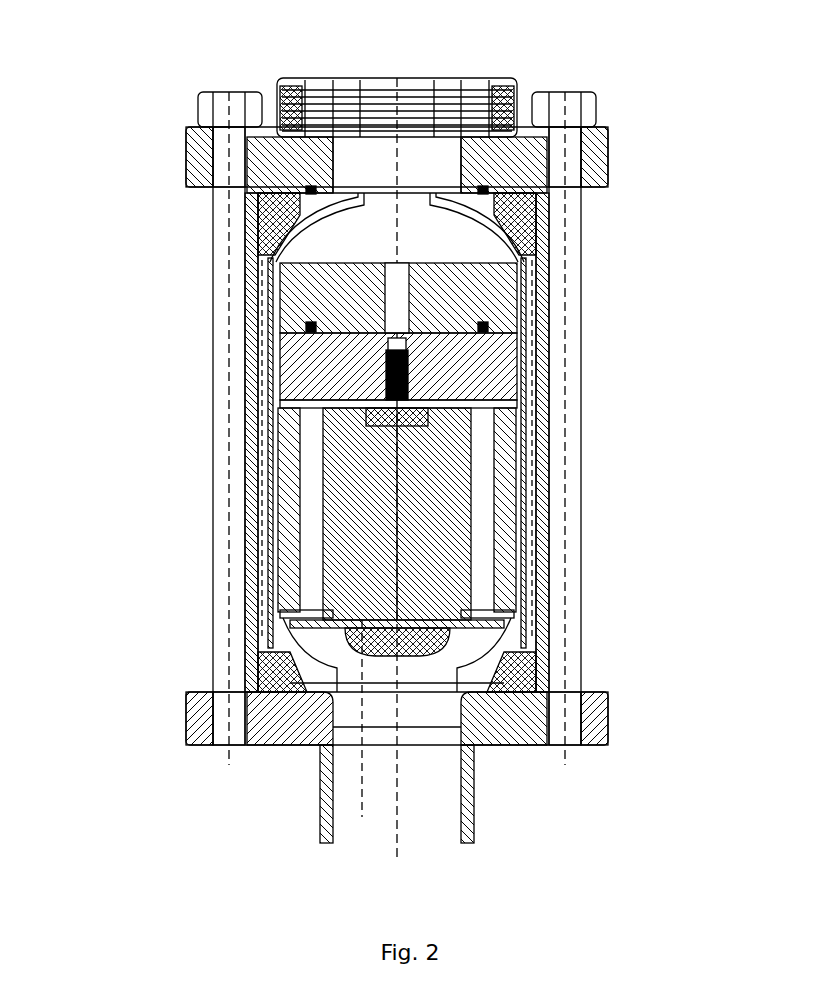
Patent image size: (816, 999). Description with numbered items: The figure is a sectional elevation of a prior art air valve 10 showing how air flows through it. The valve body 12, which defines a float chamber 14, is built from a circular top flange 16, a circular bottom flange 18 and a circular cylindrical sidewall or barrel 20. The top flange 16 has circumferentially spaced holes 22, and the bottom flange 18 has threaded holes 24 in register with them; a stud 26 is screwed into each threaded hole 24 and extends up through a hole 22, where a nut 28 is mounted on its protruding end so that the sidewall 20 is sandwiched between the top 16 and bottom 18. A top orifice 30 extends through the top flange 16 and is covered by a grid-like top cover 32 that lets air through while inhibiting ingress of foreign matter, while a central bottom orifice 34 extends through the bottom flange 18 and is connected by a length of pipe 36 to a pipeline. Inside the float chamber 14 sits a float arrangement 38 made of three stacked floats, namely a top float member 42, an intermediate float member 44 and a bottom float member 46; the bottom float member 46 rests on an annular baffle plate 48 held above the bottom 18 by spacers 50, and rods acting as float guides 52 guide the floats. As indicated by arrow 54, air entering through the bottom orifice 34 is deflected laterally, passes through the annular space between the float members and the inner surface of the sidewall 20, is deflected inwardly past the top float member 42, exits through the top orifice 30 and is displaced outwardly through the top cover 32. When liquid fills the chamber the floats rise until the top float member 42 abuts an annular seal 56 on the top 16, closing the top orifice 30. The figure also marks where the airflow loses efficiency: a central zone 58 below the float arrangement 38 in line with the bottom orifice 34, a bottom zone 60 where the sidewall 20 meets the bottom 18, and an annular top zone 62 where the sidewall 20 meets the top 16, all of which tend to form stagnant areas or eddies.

The air valve 10 is at (120, 70).
The valve body 12 is at (626, 336).
The float chamber 14 is at (296, 243).
The top flange 16 is at (601, 160).
The bottom flange 18 is at (601, 715).
The sidewall 20 is at (541, 502).
The holes 22 is at (216, 152).
The threaded holes 24 is at (212, 734).
The stud 26 is at (213, 392).
The nuts 28 is at (230, 100).
The top orifice 30 is at (416, 160).
The top cover 32 is at (372, 78).
The bottom orifice 34 is at (345, 722).
The pipe 36 is at (469, 765).
The float arrangement 38 is at (532, 386).
The top float member 42 is at (500, 270).
The intermediate float member 44 is at (280, 372).
The bottom float member 46 is at (527, 535).
The annular baffle plate 48 is at (280, 605).
The spacers 50 is at (515, 628).
The float guides 52 is at (527, 460).
The arrow 54 is at (266, 290).
The annular seal 56 is at (472, 197).
The central zone 58 is at (424, 695).
The bottom zone 60 is at (241, 646).
The top zone 62 is at (222, 198).